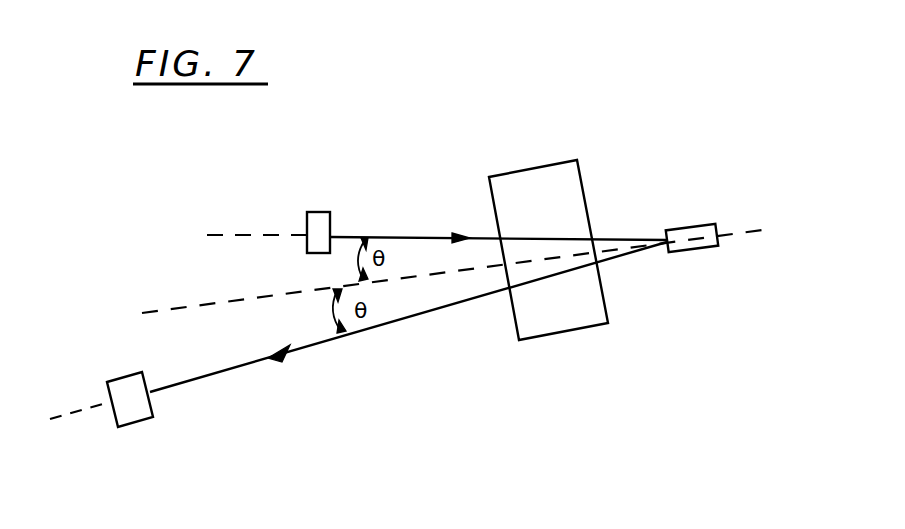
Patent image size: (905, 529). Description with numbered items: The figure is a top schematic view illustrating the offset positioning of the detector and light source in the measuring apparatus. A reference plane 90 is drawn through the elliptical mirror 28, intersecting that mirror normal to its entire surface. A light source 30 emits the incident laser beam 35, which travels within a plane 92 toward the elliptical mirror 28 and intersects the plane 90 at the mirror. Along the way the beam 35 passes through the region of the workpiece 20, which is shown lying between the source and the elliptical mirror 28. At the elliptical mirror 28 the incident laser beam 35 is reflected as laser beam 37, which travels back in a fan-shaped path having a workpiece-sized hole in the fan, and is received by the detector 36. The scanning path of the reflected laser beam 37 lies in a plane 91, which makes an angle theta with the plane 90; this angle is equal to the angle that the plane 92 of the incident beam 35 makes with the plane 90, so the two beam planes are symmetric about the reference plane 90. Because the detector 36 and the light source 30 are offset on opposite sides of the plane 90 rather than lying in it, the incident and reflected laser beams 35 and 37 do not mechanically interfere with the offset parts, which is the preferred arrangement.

The workpiece 20 is at (574, 332).
The elliptical mirror 28 is at (689, 227).
The light source 30 is at (318, 212).
The laser beam 35 is at (427, 236).
The detector 36 is at (148, 418).
The laser beam 37 is at (432, 316).
The plane 90 is at (212, 310).
The plane 91 is at (52, 420).
The plane 92 is at (248, 236).